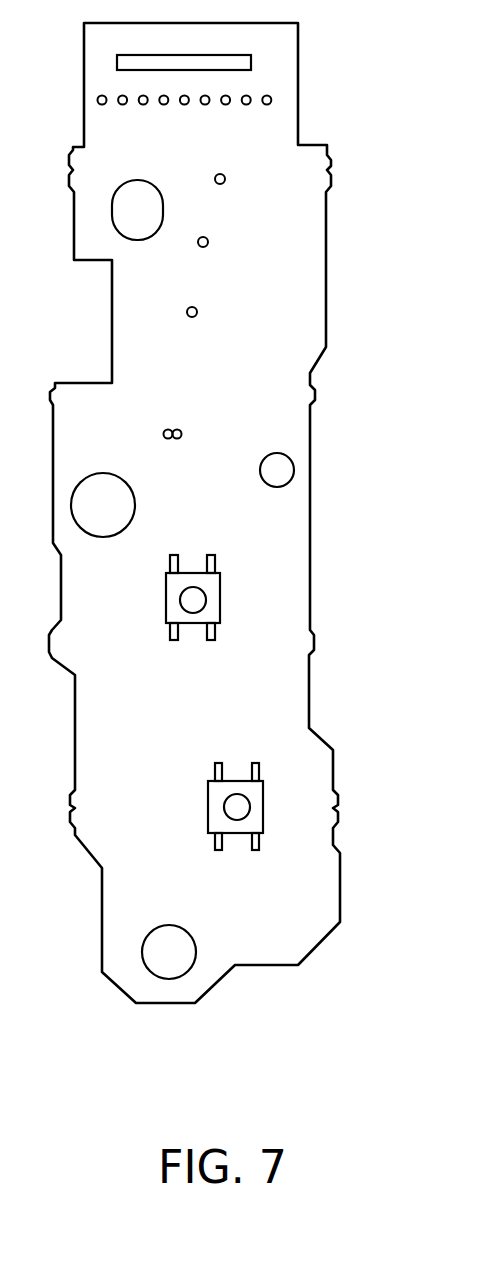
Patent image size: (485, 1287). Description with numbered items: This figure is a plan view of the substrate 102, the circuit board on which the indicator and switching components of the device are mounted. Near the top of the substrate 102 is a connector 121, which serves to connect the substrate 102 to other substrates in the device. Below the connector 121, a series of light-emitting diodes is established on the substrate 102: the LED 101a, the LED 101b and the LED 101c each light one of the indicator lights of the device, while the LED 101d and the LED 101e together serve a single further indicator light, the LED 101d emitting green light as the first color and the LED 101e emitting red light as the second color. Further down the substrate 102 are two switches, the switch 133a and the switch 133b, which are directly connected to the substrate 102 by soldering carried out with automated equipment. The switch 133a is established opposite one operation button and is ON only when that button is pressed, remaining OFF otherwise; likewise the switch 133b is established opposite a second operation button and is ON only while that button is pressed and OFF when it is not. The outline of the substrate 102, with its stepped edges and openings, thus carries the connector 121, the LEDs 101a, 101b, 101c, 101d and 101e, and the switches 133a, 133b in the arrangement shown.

The substrate 102 is at (293, 994).
The connector 121 is at (278, 63).
The LED 101a is at (226, 178).
The LED 101b is at (209, 241).
The LED 101c is at (198, 311).
The LED 101d is at (163, 434).
The LED 101e is at (182, 434).
The switch 133a is at (206, 600).
The switch 133b is at (224, 807).